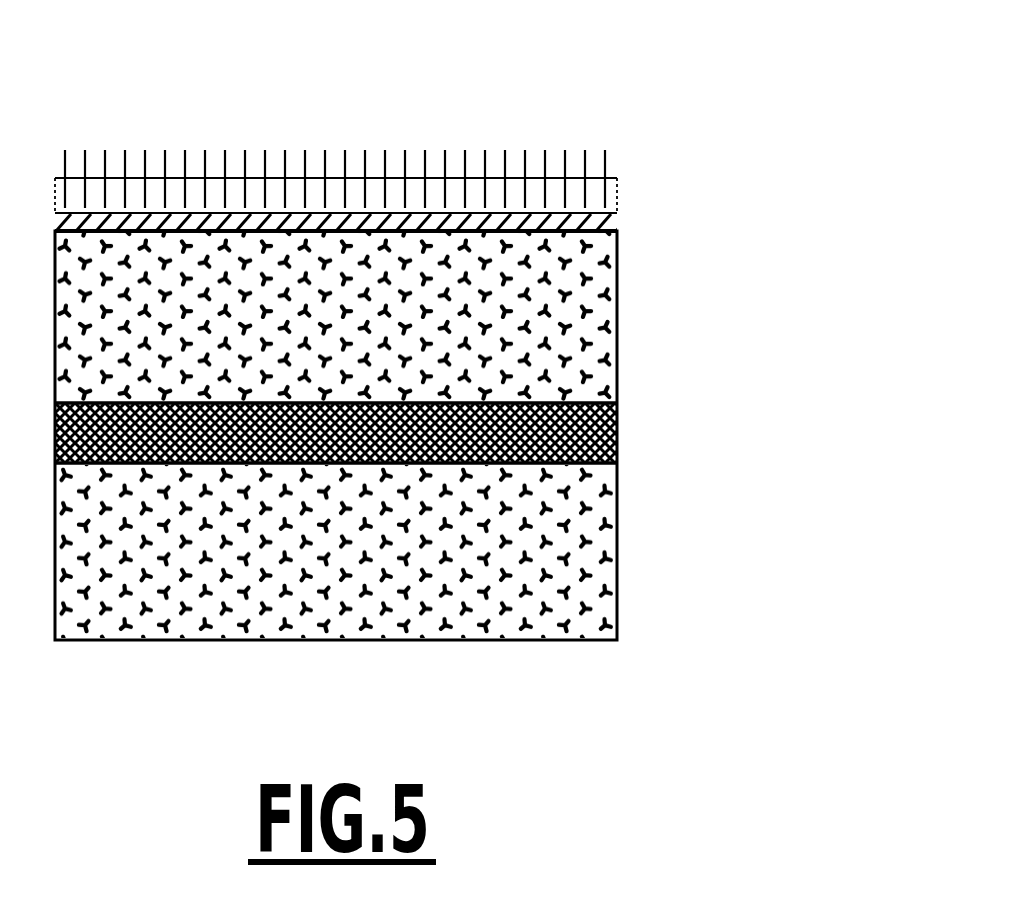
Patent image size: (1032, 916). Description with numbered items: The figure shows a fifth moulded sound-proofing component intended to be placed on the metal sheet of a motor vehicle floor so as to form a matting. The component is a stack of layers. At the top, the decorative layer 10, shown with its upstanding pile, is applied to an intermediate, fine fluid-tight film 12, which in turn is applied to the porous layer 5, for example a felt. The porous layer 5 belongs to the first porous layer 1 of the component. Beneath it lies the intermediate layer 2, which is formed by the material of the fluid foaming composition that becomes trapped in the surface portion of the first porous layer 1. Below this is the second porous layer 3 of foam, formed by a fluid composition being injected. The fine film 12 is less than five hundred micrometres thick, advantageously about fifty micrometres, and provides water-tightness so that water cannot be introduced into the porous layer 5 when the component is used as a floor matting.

The decorative layer 10 is at (522, 122).
The first porous layer 1 is at (791, 286).
The intermediate fine fluid-tight film 12 is at (628, 225).
The porous layer 5 is at (628, 322).
The intermediate layer 2 is at (628, 435).
The second porous layer of foam 3 is at (628, 550).